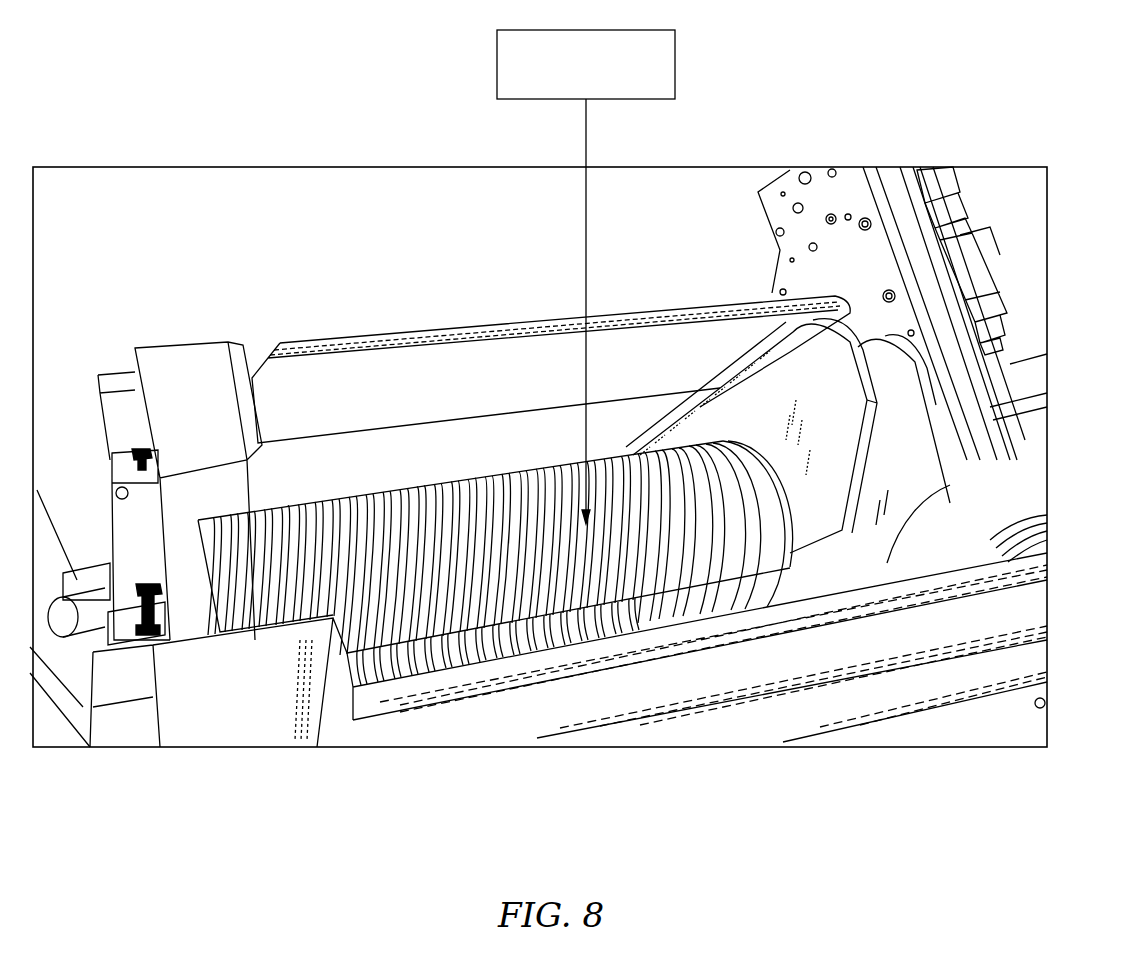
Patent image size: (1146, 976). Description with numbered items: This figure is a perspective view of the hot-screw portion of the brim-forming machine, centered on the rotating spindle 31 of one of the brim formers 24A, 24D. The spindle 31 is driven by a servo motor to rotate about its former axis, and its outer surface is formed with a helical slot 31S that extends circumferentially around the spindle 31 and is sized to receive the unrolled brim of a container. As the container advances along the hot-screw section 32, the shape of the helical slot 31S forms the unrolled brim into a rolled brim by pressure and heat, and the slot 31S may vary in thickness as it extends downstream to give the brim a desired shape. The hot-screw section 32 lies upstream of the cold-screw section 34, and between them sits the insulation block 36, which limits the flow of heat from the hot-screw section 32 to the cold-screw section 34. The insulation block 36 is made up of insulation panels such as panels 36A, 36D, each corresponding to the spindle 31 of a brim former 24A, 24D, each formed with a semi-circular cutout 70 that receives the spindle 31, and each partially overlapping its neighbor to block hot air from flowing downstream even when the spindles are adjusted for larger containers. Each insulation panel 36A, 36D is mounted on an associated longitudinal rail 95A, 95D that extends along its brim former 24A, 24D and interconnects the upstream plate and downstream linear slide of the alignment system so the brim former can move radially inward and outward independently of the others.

The hot-screw section 32 is at (675, 64).
The helical slot 31S is at (347, 500).
The rotating spindle 31 is at (597, 583).
The longitudinal rail 95D is at (658, 298).
The longitudinal rail 95A is at (965, 712).
The brim former 24A is at (480, 668).
The brim former 24D is at (383, 635).
The semi-circular cutout 70 is at (750, 417).
The insulation panel 36D is at (828, 488).
The insulation panel 36A is at (920, 535).
The insulation block 36 is at (955, 394).
The cold-screw section 34 is at (1032, 503).